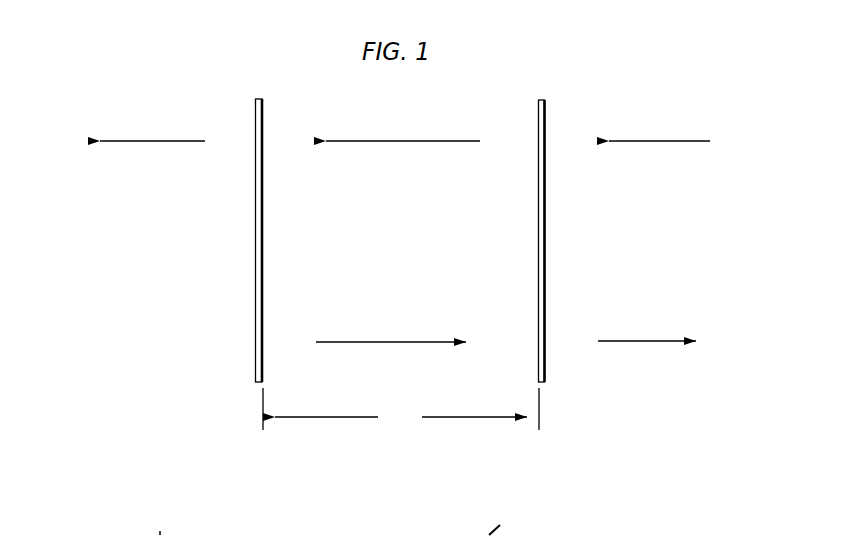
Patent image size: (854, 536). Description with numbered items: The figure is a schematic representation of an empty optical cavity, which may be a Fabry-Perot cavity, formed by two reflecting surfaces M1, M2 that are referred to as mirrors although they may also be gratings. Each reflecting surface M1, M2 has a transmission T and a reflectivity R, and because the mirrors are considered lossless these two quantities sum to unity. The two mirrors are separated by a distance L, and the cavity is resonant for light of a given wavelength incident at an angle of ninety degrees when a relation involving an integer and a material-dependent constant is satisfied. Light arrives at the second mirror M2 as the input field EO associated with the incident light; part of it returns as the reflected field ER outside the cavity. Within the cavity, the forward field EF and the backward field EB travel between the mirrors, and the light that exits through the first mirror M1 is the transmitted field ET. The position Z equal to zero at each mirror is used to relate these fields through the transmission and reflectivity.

The first reflecting surface M1 is at (263, 365).
The second reflecting surface M2 is at (582, 233).
The transmitted field ET is at (146, 182).
The forward field EF is at (403, 138).
The input field EO is at (675, 148).
The backward field EB is at (391, 351).
The reflected field ER is at (647, 351).
The distance L is at (401, 420).